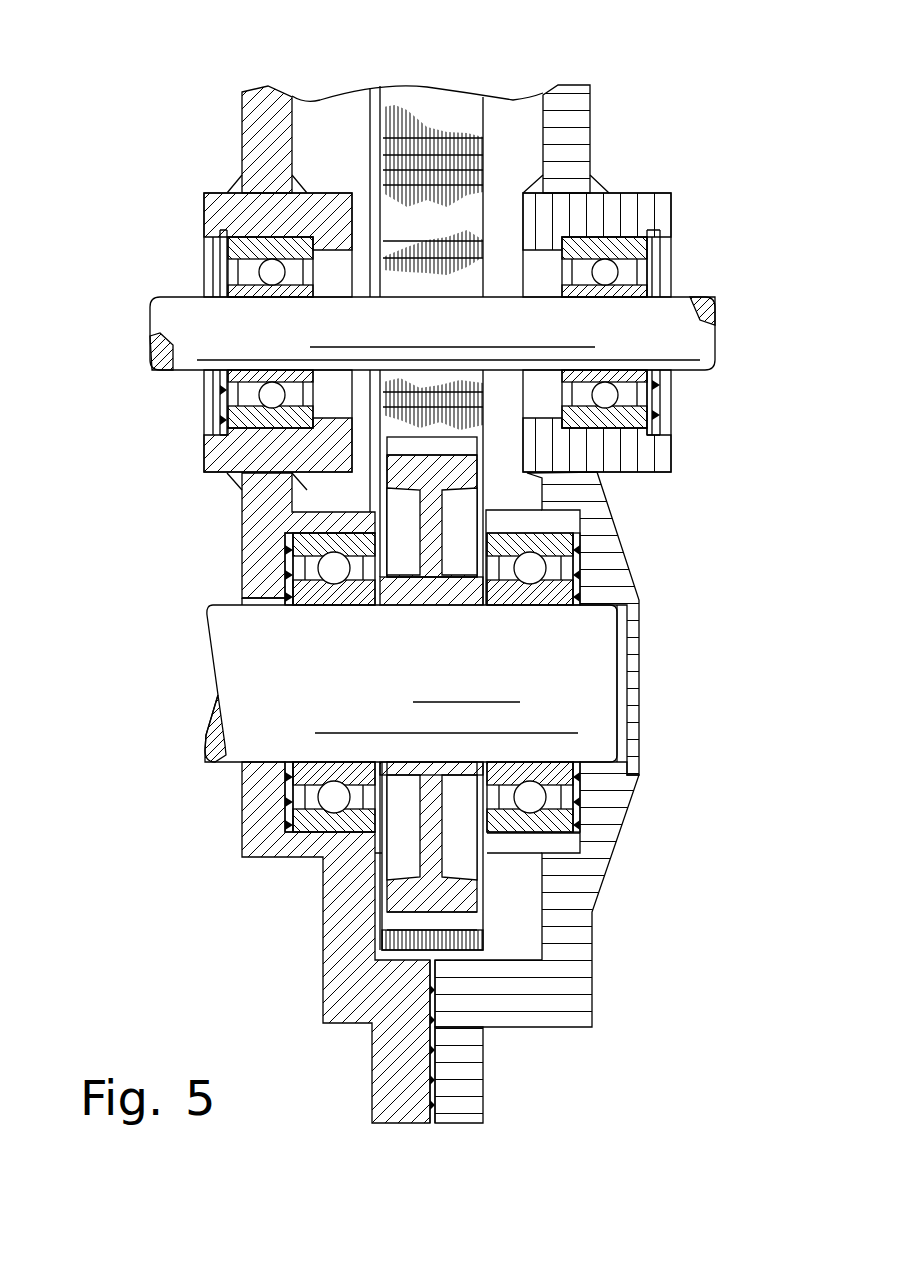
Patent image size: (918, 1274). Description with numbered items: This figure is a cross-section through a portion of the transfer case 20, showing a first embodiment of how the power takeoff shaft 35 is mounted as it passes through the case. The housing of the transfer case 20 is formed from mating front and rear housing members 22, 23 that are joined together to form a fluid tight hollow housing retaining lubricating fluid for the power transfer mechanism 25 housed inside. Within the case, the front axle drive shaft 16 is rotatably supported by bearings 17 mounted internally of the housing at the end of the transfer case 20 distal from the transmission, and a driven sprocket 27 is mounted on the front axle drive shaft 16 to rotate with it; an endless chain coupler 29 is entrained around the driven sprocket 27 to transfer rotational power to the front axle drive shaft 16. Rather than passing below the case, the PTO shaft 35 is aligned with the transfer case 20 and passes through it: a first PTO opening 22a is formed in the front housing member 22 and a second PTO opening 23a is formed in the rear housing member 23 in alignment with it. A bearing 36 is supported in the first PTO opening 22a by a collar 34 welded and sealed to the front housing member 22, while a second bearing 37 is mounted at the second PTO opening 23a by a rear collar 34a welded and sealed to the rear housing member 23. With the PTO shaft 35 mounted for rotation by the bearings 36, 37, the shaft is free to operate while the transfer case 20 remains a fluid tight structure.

The front axle drive shaft 16 is at (343, 684).
The bearings 17 is at (300, 592).
The transfer case 20 is at (212, 772).
The front housing member 22 is at (242, 140).
The first PTO opening 22a is at (190, 238).
The rear housing member 23 is at (590, 138).
The second PTO opening 23a is at (693, 238).
The power transfer mechanism 25 is at (447, 72).
The driven sprocket 27 is at (442, 583).
The endless chain coupler 29 is at (428, 100).
The collar 34 is at (205, 465).
The rear collar 34a is at (672, 463).
The power takeoff shaft 35 is at (283, 341).
The bearing 36 is at (228, 417).
The second bearing 37 is at (632, 413).